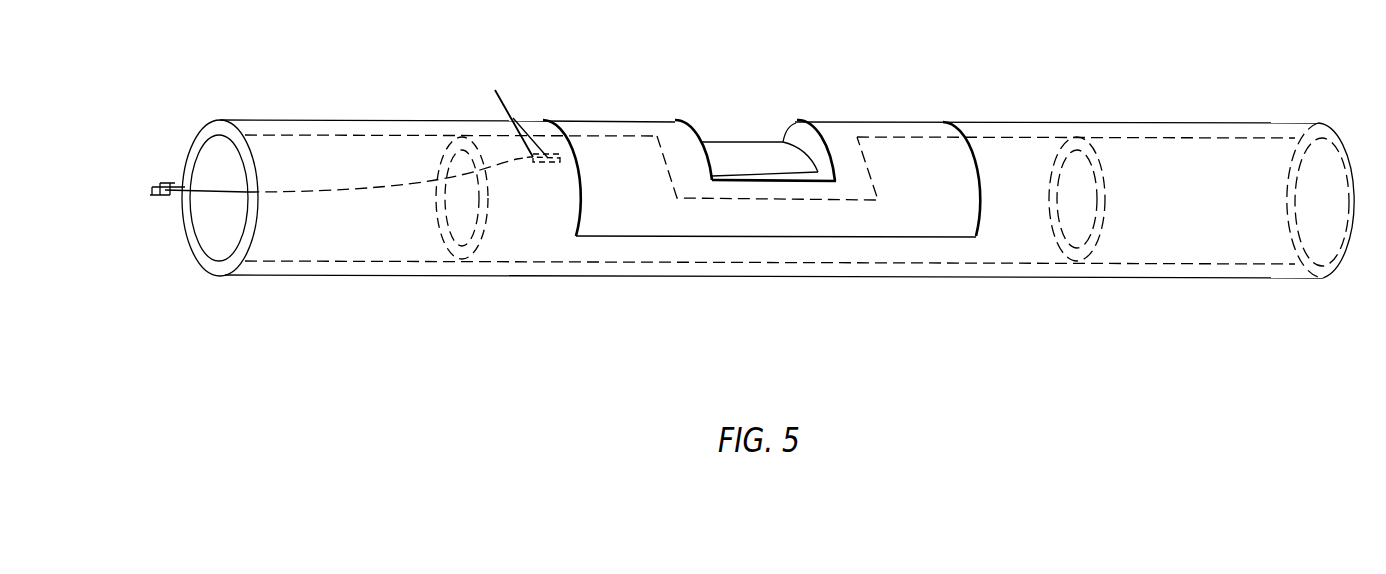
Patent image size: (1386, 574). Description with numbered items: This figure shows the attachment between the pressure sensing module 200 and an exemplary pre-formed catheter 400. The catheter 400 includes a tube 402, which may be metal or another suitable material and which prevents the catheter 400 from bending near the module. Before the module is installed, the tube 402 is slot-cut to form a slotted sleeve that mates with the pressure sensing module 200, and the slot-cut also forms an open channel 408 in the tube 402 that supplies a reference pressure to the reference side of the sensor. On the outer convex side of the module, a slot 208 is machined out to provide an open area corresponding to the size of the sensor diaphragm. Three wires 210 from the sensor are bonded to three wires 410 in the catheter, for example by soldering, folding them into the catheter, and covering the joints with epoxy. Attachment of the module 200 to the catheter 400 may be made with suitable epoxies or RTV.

The catheter 400 is at (1187, 93).
The pressure sensing module 200 is at (893, 92).
The slot 208 is at (752, 123).
The wires 210 is at (495, 90).
The tube 402 is at (450, 245).
The open channel 408 is at (465, 203).
The wires 410 is at (164, 185).